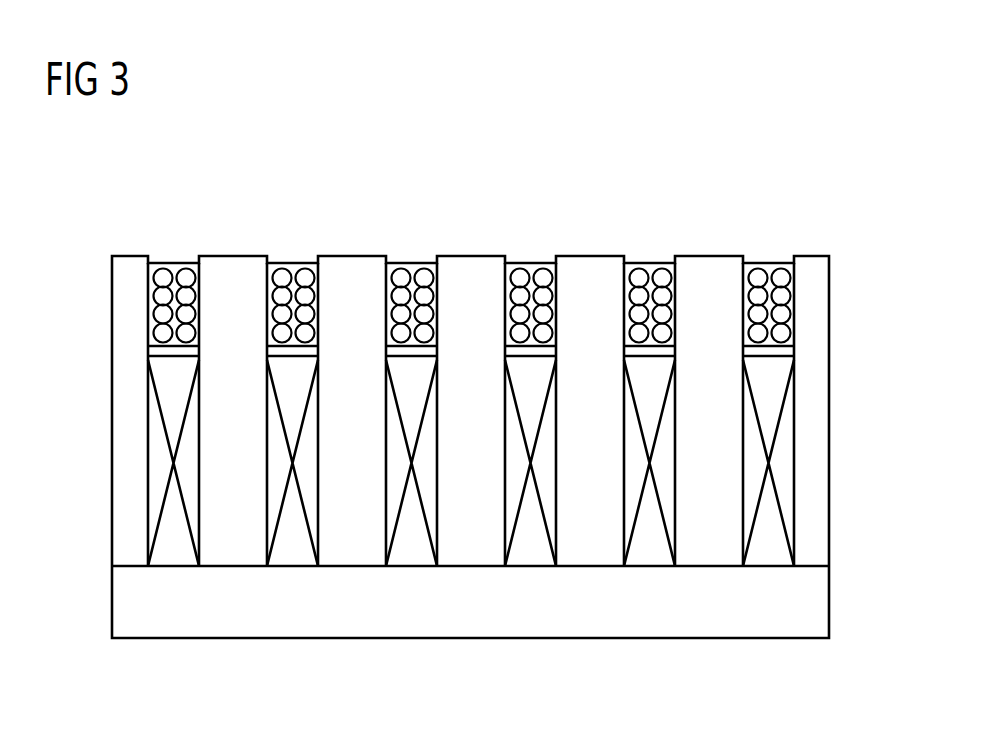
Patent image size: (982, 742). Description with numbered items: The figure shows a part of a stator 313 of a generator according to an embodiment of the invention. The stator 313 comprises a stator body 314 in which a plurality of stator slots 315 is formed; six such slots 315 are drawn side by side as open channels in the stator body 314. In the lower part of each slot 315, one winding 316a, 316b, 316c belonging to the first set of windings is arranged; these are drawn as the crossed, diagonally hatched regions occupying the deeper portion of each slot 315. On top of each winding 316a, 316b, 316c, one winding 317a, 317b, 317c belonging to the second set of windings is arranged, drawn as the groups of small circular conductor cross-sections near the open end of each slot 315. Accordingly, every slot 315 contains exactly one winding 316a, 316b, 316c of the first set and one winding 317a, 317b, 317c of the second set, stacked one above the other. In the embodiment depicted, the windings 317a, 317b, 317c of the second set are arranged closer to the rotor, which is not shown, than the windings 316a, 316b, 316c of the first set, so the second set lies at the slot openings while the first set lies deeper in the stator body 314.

The stator 313 is at (470, 377).
The stator body 314 is at (820, 315).
The stator slot 315 is at (502, 366).
The winding 316a is at (153, 463).
The winding 316b is at (293, 556).
The winding 316c is at (412, 556).
The winding 317a is at (175, 265).
The winding 317b is at (293, 268).
The winding 317c is at (413, 268).